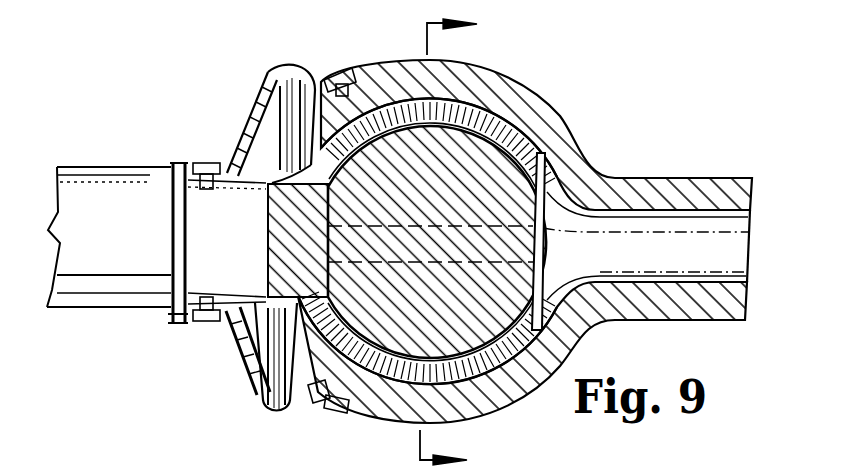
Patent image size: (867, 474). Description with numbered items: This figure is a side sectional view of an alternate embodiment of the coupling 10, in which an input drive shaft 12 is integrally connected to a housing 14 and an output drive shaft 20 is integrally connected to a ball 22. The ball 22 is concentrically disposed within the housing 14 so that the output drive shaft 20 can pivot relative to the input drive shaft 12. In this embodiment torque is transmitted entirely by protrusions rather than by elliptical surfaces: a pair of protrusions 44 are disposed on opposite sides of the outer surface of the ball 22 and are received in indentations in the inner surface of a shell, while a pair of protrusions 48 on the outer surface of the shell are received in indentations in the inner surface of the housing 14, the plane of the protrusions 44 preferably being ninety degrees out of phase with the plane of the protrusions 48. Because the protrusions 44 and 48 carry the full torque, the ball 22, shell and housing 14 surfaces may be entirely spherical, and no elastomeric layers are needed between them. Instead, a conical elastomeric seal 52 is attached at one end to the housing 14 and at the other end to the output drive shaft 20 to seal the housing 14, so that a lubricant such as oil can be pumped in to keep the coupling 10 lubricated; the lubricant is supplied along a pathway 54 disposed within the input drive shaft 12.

The coupling 10 is at (433, 242).
The input drive shaft 12 is at (722, 182).
The housing 14 is at (540, 110).
The output drive shaft 20 is at (123, 168).
The ball 22 is at (560, 155).
The protrusions 44 is at (313, 96).
The protrusions 48 is at (650, 175).
The conical elastomeric seal 52 is at (253, 113).
The pathway 54 is at (677, 267).